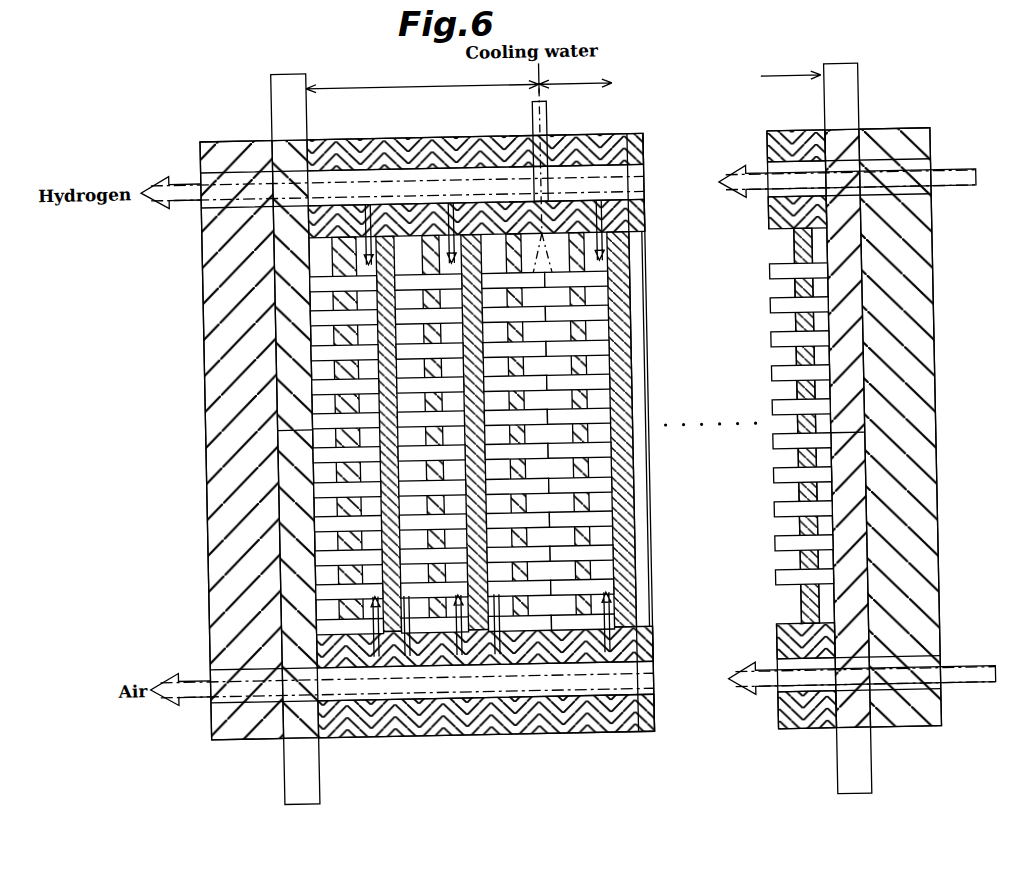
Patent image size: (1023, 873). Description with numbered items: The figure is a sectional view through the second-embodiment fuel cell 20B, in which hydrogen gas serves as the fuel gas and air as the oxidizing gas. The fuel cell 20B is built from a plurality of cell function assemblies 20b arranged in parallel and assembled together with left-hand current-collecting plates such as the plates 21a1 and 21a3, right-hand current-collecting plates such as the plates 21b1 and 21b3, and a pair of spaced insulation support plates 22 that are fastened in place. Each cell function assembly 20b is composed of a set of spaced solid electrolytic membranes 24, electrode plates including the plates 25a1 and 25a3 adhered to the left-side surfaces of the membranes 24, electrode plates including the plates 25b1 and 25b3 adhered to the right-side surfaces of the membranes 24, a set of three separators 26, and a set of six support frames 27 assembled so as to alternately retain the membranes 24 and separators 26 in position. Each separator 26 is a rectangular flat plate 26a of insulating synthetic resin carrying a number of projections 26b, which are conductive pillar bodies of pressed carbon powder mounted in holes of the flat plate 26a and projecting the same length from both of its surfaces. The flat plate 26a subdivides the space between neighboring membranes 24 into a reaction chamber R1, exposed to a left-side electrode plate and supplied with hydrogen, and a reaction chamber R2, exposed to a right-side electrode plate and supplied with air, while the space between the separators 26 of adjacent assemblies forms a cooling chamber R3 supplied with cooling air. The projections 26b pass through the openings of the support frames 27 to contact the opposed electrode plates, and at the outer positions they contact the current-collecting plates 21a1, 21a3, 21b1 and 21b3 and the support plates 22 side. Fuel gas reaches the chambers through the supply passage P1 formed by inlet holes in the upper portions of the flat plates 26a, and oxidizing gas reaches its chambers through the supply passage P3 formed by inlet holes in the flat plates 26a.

The fuel cell 20B is at (955, 112).
The cell function assembly 20b is at (416, 91).
The left-hand current-collecting plate 21a1 is at (272, 103).
The left-hand current-collecting plate 21a3 is at (272, 760).
The right-hand current-collecting plate 21b1 is at (859, 118).
The right-hand current-collecting plate 21b3 is at (859, 770).
The insulation support plate 22 is at (930, 252).
The solid electrolytic membrane 24 is at (385, 142).
The electrode plate 25a1 is at (627, 355).
The electrode plate 25b1 is at (627, 392).
The electrode plate 25a3 is at (627, 476).
The electrode plate 25b3 is at (627, 516).
The separator 26 is at (633, 625).
The flat plate 26a is at (627, 548).
The projection 26b is at (607, 592).
The support frame 27 is at (356, 142).
The supply passage of fuel gas P1 is at (625, 170).
The supply passage of oxidizing agent gas P3 is at (612, 742).
The reaction chamber R1 is at (368, 742).
The reaction chamber R2 is at (398, 742).
The cooling chamber R3 is at (607, 300).